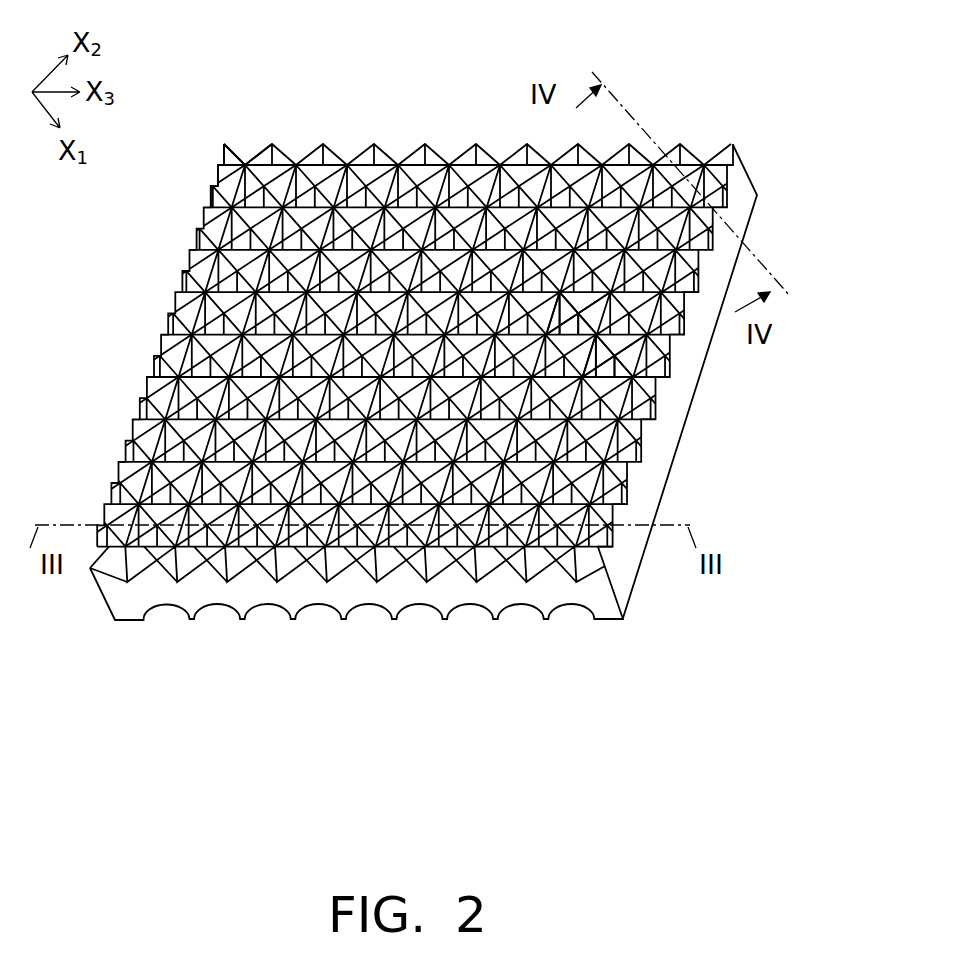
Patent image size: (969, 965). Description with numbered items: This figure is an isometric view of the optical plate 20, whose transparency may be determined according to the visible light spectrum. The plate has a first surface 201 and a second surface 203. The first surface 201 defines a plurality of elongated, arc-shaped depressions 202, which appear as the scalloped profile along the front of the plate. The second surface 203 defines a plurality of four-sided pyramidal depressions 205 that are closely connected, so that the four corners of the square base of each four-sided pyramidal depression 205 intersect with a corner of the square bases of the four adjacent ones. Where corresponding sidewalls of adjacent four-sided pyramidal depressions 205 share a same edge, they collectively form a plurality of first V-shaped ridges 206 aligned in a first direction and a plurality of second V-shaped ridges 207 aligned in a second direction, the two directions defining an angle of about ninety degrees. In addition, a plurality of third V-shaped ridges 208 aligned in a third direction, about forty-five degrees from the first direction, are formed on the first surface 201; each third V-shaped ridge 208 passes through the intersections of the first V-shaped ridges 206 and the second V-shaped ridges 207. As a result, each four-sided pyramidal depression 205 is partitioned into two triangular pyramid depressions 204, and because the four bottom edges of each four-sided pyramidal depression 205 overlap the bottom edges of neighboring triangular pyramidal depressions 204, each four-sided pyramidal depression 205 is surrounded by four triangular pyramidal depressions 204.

The optical plate 20 is at (523, 41).
The first surface 201 is at (700, 467).
The elongated, arc-shaped depressions 202 is at (570, 622).
The second surface 203 is at (710, 164).
The triangular pyramid depressions 204 is at (575, 298).
The four-sided pyramidal depressions 205 is at (578, 336).
The first V-shaped ridges 206 is at (232, 146).
The second V-shaped ridges 207 is at (218, 173).
The third V-shaped ridges 208 is at (222, 160).